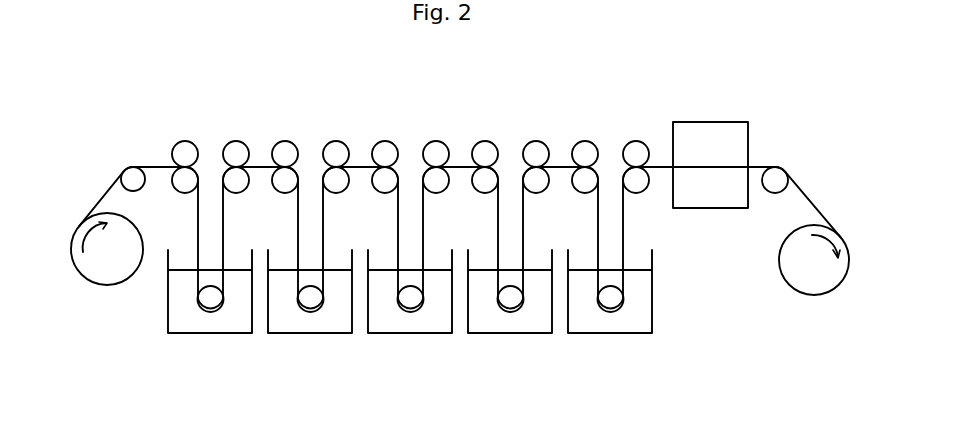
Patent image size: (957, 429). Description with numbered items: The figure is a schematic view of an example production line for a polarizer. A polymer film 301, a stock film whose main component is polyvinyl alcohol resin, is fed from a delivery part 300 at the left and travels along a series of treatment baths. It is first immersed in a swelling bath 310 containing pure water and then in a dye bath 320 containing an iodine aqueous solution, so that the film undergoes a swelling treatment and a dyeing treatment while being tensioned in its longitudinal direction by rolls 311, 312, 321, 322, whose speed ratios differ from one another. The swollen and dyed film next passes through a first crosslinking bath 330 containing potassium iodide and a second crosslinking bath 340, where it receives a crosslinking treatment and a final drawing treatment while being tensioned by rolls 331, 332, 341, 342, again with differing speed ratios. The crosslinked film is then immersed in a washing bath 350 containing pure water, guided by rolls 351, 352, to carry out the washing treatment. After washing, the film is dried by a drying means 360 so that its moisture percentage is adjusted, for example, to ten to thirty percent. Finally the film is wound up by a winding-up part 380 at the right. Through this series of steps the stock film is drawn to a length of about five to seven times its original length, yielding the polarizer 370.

The delivery part 300 is at (88, 267).
The polymer film 301 is at (102, 193).
The swelling bath 310 is at (210, 325).
The roll 311 is at (185, 150).
The roll 312 is at (236, 150).
The dye bath 320 is at (318, 325).
The roll 321 is at (285, 150).
The roll 322 is at (336, 150).
The first crosslinking bath 330 is at (412, 325).
The roll 331 is at (385, 150).
The roll 332 is at (436, 150).
The second crosslinking bath 340 is at (513, 325).
The roll 341 is at (485, 150).
The roll 342 is at (536, 150).
The washing bath 350 is at (614, 325).
The roll 351 is at (585, 150).
The roll 352 is at (636, 150).
The drying means 360 is at (707, 140).
The polarizer 370 is at (808, 192).
The winding-up part 380 is at (830, 277).